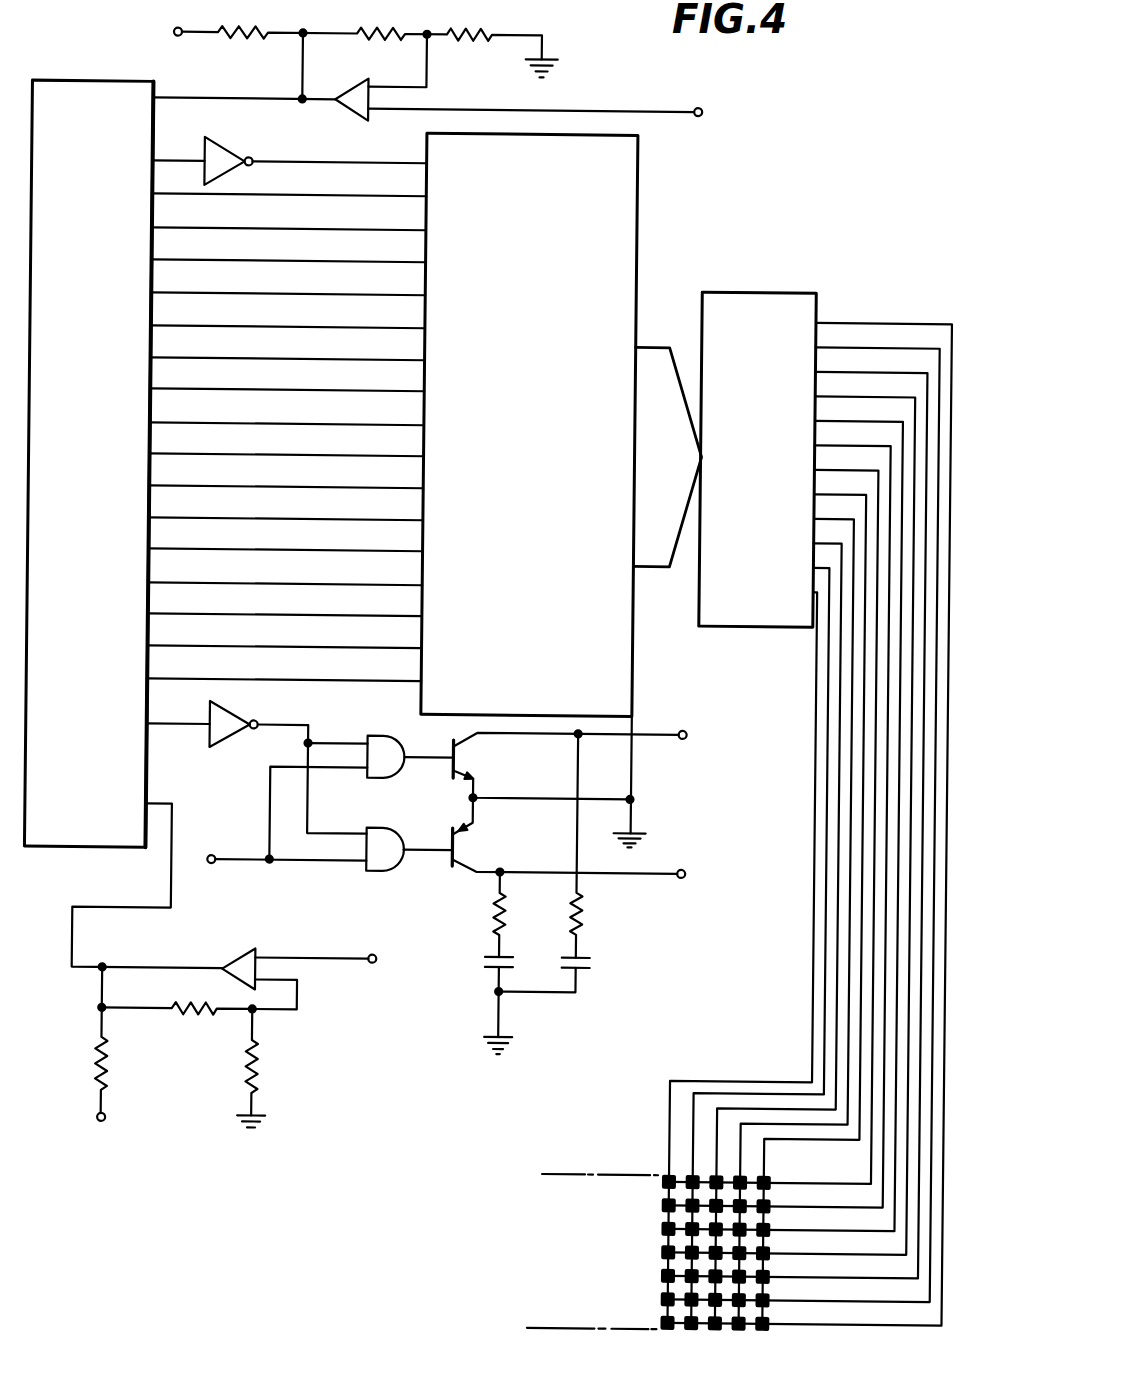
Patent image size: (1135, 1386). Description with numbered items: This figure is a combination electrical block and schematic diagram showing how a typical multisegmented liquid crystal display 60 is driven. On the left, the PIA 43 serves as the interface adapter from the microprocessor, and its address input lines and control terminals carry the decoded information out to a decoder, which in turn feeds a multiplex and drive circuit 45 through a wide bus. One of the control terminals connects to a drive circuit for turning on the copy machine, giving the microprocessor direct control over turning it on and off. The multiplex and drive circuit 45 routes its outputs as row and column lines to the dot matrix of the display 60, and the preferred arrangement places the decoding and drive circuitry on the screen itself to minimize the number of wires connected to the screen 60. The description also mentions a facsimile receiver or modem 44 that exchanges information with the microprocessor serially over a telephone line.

The PIA 43 is at (90, 840).
The facsimile receiver or modem 44 is at (539, 151).
The multiplex and drive circuit 45 is at (720, 289).
The multisegmented liquid crystal display 60 is at (728, 1327).